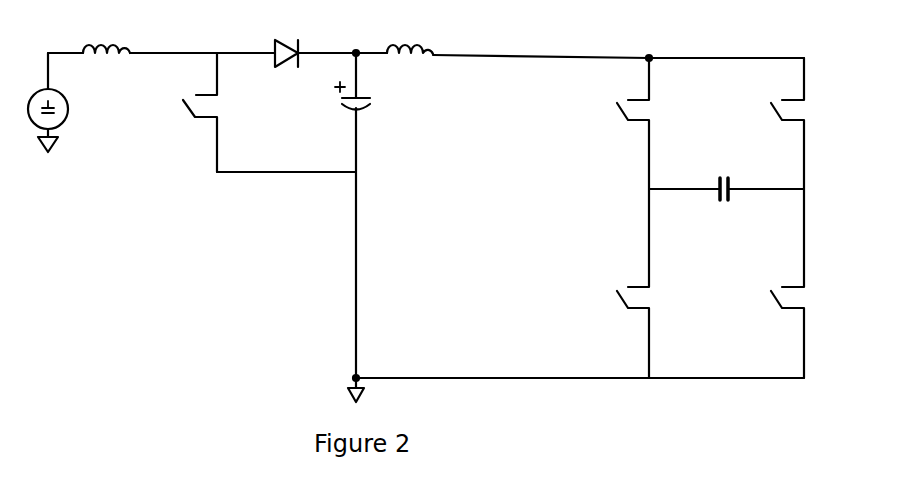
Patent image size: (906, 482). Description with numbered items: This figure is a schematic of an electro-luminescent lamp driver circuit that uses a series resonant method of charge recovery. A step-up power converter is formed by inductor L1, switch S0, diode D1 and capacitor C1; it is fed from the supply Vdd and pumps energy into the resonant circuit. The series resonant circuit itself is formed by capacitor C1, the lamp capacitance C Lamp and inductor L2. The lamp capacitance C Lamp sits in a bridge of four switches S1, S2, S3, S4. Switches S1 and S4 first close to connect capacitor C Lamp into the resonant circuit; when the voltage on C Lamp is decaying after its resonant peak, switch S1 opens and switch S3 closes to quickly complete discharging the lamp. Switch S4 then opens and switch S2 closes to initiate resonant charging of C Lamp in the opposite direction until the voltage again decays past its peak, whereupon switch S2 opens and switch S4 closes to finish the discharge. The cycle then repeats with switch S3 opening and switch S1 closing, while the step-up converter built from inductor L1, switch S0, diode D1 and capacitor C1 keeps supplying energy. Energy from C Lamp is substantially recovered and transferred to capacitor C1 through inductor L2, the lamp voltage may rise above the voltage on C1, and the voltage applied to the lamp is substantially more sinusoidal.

The DC supply voltage source Vdd is at (73, 102).
The inductor L1 is at (106, 33).
The switch S0 is at (196, 112).
The diode D1 is at (288, 40).
The capacitor C1 is at (371, 84).
The inductor L2 is at (410, 35).
The switch S1 is at (626, 123).
The switch S2 is at (781, 123).
The switch S3 is at (626, 283).
The switch S4 is at (781, 283).
The capacitor C lamp C Lamp is at (726, 173).